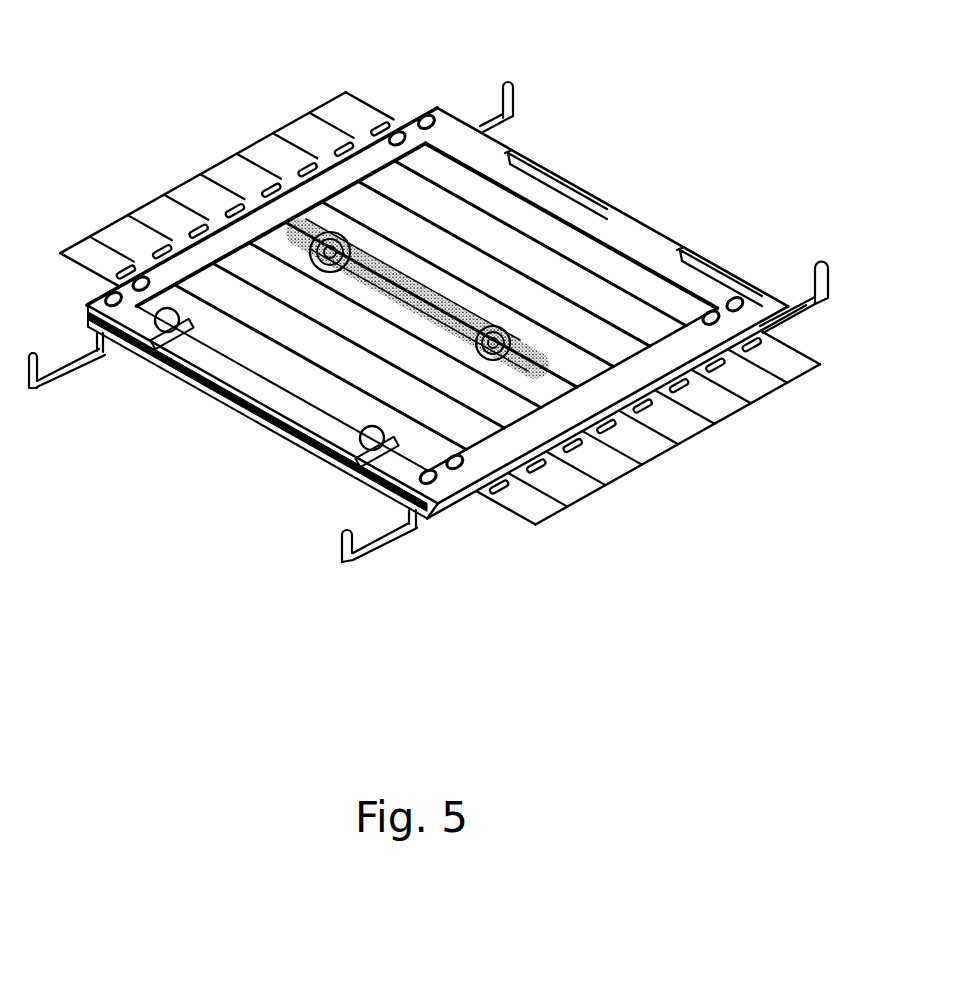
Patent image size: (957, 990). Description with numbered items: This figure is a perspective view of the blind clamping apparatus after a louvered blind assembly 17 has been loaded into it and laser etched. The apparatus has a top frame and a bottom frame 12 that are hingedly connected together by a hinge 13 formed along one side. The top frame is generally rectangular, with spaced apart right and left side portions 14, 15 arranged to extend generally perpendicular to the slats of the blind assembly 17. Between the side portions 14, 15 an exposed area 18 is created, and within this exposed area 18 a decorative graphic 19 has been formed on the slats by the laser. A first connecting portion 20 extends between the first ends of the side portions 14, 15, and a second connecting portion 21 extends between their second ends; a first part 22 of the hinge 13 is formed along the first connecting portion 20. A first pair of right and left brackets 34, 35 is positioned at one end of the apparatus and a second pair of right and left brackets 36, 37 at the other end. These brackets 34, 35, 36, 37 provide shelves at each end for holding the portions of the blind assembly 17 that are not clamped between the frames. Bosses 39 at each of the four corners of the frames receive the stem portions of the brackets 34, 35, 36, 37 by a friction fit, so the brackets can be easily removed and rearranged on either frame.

The bottom frame 12 is at (273, 438).
The hinge 13 is at (688, 257).
The right side portion 14 is at (634, 374).
The left side portion 15 is at (263, 215).
The blind assembly 17 is at (592, 496).
The exposed area 18 is at (510, 247).
The decorative graphic 19 is at (357, 232).
The first connecting portion 20 is at (458, 132).
The second connecting portion 21 is at (221, 373).
The first part of the hinge 22 is at (626, 211).
The right bracket 34 is at (832, 285).
The left bracket 35 is at (516, 98).
The right bracket 36 is at (370, 560).
The left bracket 37 is at (45, 383).
The bosses 39 is at (736, 300).